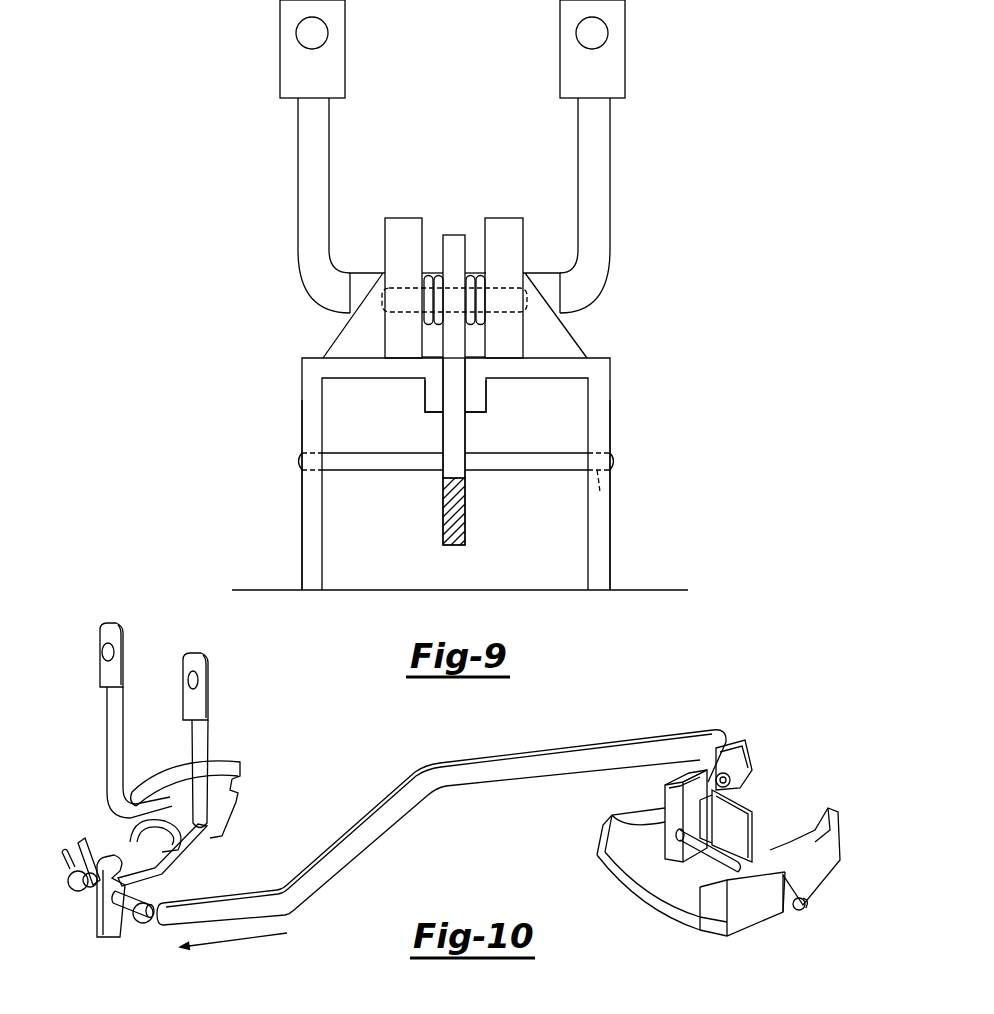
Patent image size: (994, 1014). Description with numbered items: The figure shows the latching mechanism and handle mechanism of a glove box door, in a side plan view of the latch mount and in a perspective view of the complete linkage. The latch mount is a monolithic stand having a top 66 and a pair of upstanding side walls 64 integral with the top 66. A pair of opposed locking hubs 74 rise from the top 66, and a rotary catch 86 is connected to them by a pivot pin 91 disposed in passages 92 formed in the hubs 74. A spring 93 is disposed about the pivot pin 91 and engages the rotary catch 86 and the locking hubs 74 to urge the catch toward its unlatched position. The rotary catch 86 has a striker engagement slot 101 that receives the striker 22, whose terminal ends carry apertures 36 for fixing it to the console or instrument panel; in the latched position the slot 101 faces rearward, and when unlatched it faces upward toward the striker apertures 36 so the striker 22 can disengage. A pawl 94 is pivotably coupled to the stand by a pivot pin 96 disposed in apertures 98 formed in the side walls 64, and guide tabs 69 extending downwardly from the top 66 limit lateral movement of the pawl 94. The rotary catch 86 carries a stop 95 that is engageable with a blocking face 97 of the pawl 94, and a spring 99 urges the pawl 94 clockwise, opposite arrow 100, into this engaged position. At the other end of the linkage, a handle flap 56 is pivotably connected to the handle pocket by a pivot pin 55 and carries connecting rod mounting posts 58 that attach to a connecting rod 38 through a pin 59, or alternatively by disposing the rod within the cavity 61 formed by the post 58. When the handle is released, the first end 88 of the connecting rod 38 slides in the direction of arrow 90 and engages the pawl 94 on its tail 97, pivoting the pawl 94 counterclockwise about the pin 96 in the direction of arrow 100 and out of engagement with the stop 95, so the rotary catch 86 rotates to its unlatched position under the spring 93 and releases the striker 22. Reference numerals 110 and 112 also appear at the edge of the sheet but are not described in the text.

In FIG. 10, the striker 22 is at (216, 734).
In FIG. 10, the apertures 36 is at (190, 686).
In FIG. 9, the connecting rod 38 is at (458, 510).
In FIG. 10, the connecting rod 38 is at (367, 835).
In FIG. 10, the pivot pin 55 is at (727, 862).
In FIG. 10, the handle flap 56 is at (741, 912).
In FIG. 10, the connecting rod mounting posts 58 is at (833, 810).
In FIG. 10, the pin 59 is at (731, 783).
In FIG. 10, the cavity 61 is at (690, 776).
In FIG. 9, the side walls 64 is at (312, 423).
In FIG. 9, the top 66 is at (318, 372).
In FIG. 9, the guide tabs 69 is at (433, 402).
In FIG. 9, the locking hubs 74 is at (403, 212).
In FIG. 10, the rotary catch 86 is at (246, 764).
In FIG. 10, the first end 88 is at (161, 926).
In FIG. 10, the arrow 90 is at (240, 941).
In FIG. 9, the pivot pin 91 is at (500, 312).
In FIG. 9, the passages 92 is at (510, 292).
In FIG. 9, the spring 93 is at (473, 268).
In FIG. 9, the pawl 94 is at (453, 433).
In FIG. 10, the pawl 94 is at (196, 873).
In FIG. 10, the stop 95 is at (210, 850).
In FIG. 9, the pivot pin 96 is at (515, 460).
In FIG. 10, the pivot pin 96 is at (128, 905).
In FIG. 10, the blocking face 97 is at (231, 808).
In FIG. 9, the apertures 98 is at (600, 493).
In FIG. 10, the spring 99 is at (85, 832).
In FIG. 10, the arrow 100 is at (148, 927).
In FIG. 10, the striker engagement slot 101 is at (112, 806).
In FIG. 10, the element 110 is at (293, 1008).
In FIG. 10, the element 112 is at (573, 1008).